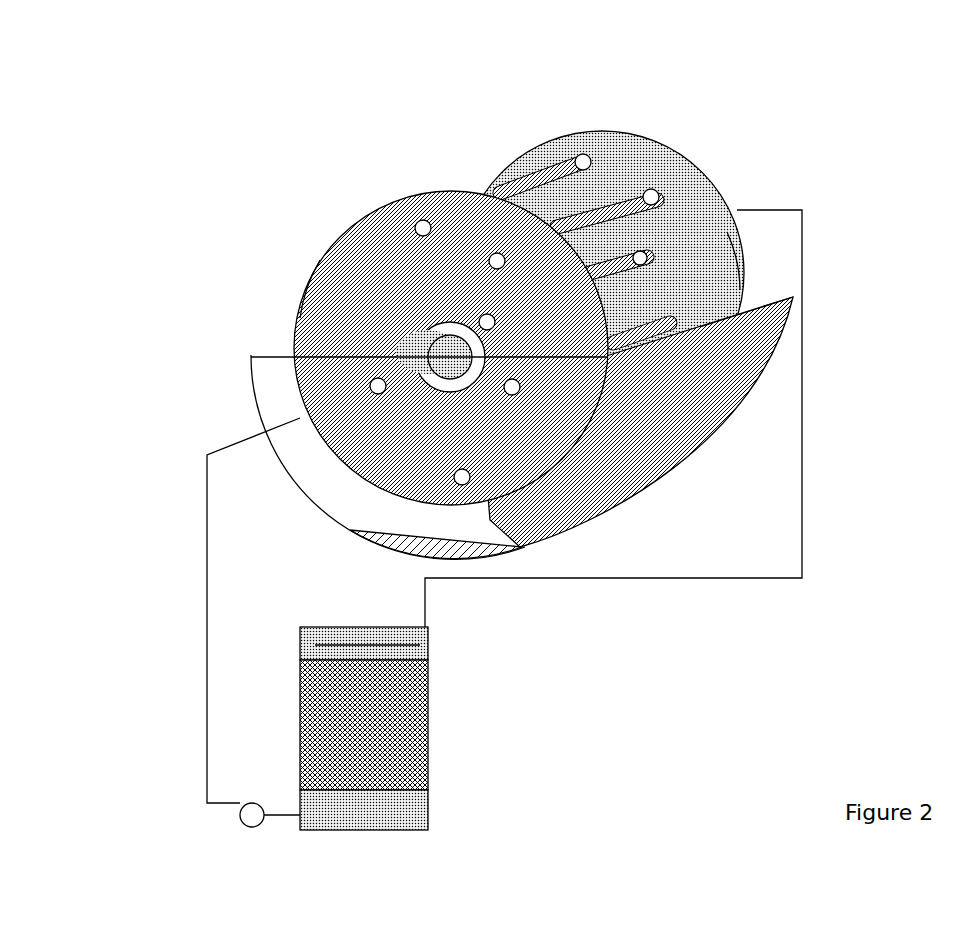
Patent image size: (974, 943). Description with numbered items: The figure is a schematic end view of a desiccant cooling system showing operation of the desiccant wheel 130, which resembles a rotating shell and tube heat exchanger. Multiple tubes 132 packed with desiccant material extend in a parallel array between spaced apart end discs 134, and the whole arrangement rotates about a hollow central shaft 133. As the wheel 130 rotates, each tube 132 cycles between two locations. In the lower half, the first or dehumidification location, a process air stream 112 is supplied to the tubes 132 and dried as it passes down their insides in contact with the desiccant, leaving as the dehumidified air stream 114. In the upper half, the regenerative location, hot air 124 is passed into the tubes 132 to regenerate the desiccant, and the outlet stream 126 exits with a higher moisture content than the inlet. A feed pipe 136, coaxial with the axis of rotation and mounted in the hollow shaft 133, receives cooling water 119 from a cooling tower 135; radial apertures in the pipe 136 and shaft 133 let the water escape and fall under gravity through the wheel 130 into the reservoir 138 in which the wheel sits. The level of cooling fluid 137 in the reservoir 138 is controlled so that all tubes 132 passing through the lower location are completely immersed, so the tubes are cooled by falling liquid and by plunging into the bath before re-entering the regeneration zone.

The process air stream 112 is at (615, 462).
The dehumidified air stream 114 is at (800, 313).
The cooling water 119 is at (222, 622).
The hot air 124 is at (675, 137).
The outlet stream 126 is at (572, 134).
The desiccant wheel 130 is at (657, 510).
The tubes 132 is at (651, 195).
The hollow central shaft 133 is at (480, 163).
The end discs 134 is at (727, 232).
The cooling tower 135 is at (440, 706).
The feed pipe 136 is at (398, 196).
The cooling fluid 137 is at (507, 545).
The reservoir 138 is at (773, 397).